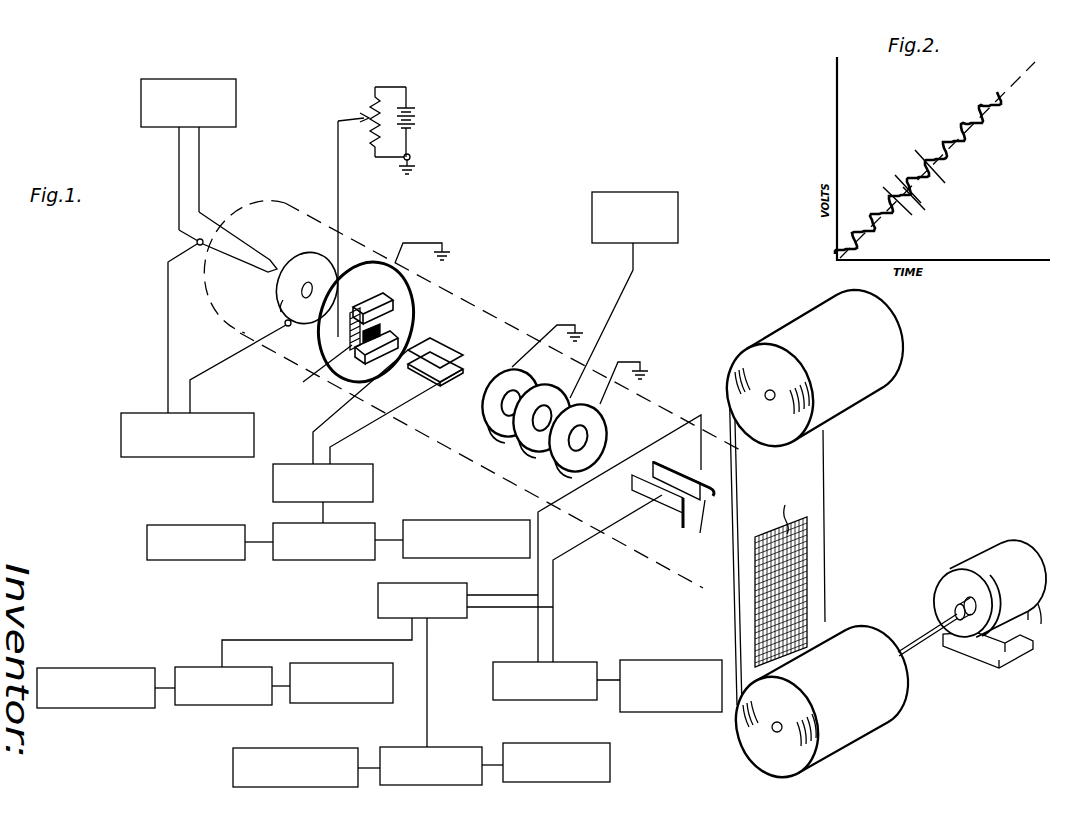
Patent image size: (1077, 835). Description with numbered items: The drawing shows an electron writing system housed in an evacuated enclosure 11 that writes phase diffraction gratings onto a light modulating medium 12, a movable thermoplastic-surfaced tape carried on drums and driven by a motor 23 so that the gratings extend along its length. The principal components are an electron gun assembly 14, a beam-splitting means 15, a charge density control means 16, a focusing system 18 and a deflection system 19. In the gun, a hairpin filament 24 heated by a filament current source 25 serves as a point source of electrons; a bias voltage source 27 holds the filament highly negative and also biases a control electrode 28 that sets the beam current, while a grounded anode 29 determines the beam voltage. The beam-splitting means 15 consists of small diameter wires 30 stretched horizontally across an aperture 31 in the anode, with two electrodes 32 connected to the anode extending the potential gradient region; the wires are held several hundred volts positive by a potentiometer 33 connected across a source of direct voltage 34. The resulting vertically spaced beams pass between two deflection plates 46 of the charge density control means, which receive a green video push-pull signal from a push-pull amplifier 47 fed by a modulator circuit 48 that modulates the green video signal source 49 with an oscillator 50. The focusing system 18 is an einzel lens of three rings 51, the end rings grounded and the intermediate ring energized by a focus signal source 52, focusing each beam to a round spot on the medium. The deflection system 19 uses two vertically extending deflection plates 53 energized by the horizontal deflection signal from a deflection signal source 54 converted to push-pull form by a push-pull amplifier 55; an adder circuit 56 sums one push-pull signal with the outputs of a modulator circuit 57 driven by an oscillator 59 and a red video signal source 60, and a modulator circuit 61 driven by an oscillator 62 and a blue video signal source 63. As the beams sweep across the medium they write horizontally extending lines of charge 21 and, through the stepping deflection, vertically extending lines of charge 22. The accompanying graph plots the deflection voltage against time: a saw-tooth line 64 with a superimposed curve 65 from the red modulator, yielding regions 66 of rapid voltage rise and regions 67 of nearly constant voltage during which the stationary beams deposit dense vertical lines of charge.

In FIG. 1, the evacuated enclosure 11 is at (478, 309).
In FIG. 1, the light modulating medium 12 is at (823, 563).
In FIG. 1, the electron gun assembly 14 is at (302, 213).
In FIG. 1, the beam-splitting means 15 is at (440, 304).
In FIG. 1, the charge density control means 16 is at (486, 340).
In FIG. 1, the focusing system 18 is at (598, 390).
In FIG. 1, the deflection system 19 is at (695, 461).
In FIG. 1, the horizontally-extending lines of charge 21 is at (788, 510).
In FIG. 1, the vertically-extending lines of charge 22 is at (755, 624).
In FIG. 1, the motor 23 is at (992, 550).
In FIG. 1, the hairpin filament 24 is at (266, 277).
In FIG. 1, the filament current source 25 is at (237, 96).
In FIG. 1, the bias voltage source 27 is at (145, 413).
In FIG. 1, the control electrode 28 is at (283, 318).
In FIG. 1, the anode 29 is at (386, 262).
In FIG. 1, the small diameter wires 30 is at (370, 323).
In FIG. 1, the aperture 31 is at (322, 371).
In FIG. 1, the electrodes 32 is at (385, 357).
In FIG. 1, the potentiometer 33 is at (374, 130).
In FIG. 1, the source of direct voltage 34 is at (418, 108).
In FIG. 1, the deflection plates 46 is at (466, 363).
In FIG. 1, the push-pull amplifier 47 is at (374, 478).
In FIG. 1, the modulator circuit 48 is at (376, 523).
In FIG. 1, the green video signal source 49 is at (459, 520).
In FIG. 1, the oscillator 50 is at (187, 525).
In FIG. 1, the rings 51 is at (530, 455).
In FIG. 1, the focus signal source 52 is at (637, 192).
In FIG. 1, the deflection plates 53 is at (670, 503).
In FIG. 1, the deflection signal source 54 is at (663, 660).
In FIG. 1, the push-pull amplifier 55 is at (575, 662).
In FIG. 1, the adder circuit 56 is at (378, 594).
In FIG. 1, the modulator circuit 57 is at (461, 747).
In FIG. 1, the oscillator 59 is at (553, 743).
In FIG. 1, the red video signal source 60 is at (275, 748).
In FIG. 1, the modulator circuit 61 is at (204, 667).
In FIG. 1, the oscillator 62 is at (338, 663).
In FIG. 1, the blue video signal source 63 is at (87, 668).
In FIG. 2, the line 64 is at (1009, 88).
In FIG. 2, the curve 65 is at (958, 130).
In FIG. 2, the regions 66 is at (930, 170).
In FIG. 2, the regions 67 is at (908, 193).